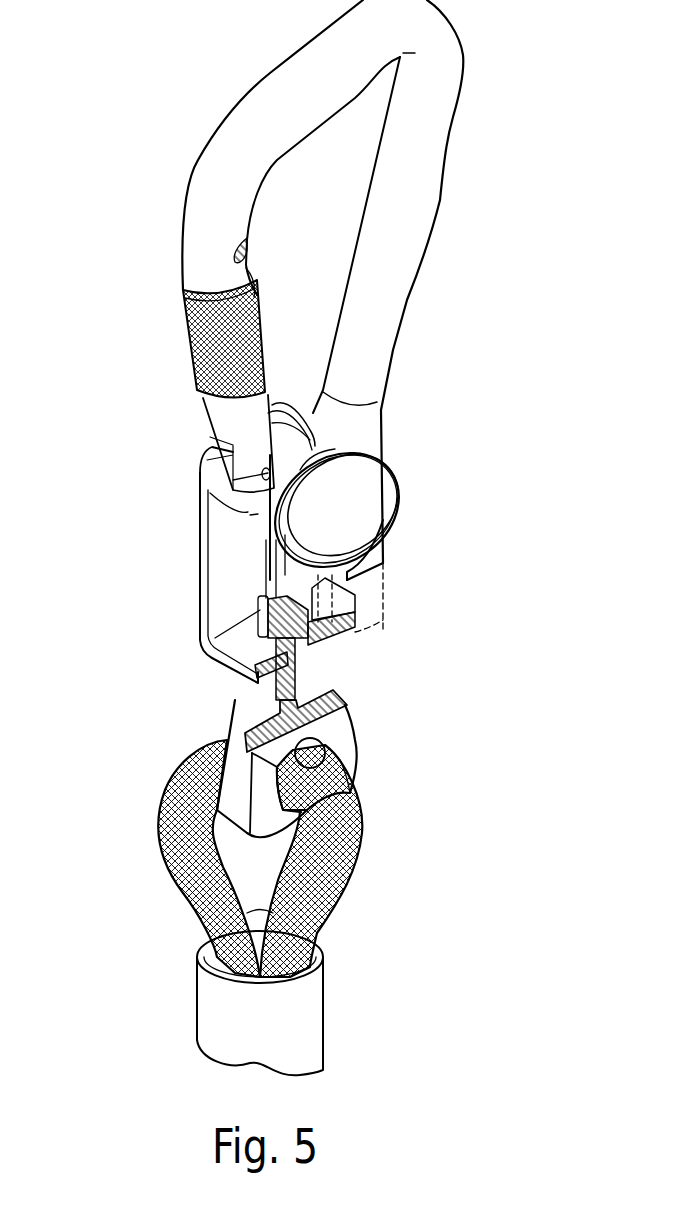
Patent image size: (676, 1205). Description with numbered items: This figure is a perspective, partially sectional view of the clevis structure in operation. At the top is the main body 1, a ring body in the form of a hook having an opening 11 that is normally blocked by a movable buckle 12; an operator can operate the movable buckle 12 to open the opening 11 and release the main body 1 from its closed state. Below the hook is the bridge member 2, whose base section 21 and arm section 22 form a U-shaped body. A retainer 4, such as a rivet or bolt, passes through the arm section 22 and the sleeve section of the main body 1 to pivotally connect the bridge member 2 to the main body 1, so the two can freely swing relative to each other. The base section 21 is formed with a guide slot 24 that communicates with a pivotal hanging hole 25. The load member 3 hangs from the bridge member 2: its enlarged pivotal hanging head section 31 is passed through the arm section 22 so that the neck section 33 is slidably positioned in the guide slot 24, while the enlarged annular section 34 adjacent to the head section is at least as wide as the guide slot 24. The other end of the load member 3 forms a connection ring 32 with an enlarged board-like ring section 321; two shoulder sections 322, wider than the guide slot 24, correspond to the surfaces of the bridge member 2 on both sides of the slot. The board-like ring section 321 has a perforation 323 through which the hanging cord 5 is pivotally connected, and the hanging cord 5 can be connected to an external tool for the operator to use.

The main body 1 is at (291, 246).
The opening 11 is at (435, 282).
The movable buckle 12 is at (203, 405).
The bridge member 2 is at (301, 561).
The base section 21 is at (223, 660).
The arm section 22 is at (383, 540).
The guide slot 24 is at (347, 593).
The pivotal hanging hole 25 is at (262, 680).
The load member 3 is at (303, 688).
The pivotal hanging head section 31 is at (262, 605).
The connection ring 32 is at (347, 760).
The board-like ring section 321 is at (347, 780).
The shoulder section 322 is at (330, 688).
The perforation 323 is at (322, 762).
The neck section 33 is at (310, 653).
The annular section 34 is at (347, 635).
The retainer 4 is at (357, 497).
The hanging cord 5 is at (333, 853).